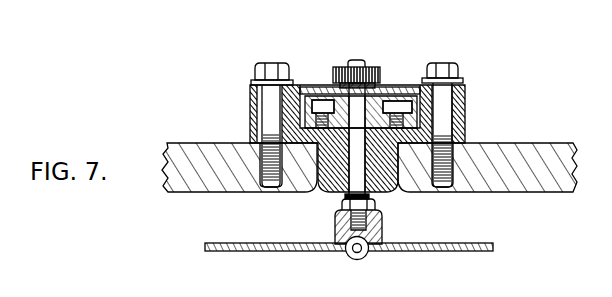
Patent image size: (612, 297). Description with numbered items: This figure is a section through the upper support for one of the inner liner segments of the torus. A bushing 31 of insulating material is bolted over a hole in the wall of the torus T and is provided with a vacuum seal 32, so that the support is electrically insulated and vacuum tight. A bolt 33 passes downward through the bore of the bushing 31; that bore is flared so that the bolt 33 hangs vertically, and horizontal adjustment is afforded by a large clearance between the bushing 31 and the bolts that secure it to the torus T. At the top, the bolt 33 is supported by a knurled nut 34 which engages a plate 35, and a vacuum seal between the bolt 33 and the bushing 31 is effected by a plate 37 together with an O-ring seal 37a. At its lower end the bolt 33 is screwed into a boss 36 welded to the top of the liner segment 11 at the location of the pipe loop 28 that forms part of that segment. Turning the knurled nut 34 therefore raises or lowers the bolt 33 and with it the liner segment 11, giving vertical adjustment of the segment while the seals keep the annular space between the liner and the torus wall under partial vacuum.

The torus T is at (538, 147).
The liner segment 11 is at (481, 251).
The pipe loop 28 is at (366, 256).
The bushing 31 is at (445, 114).
The vacuum seal 32 is at (298, 188).
The bolt 33 is at (356, 60).
The knurled nut 34 is at (372, 70).
The plate 35 is at (332, 90).
The boss 36 is at (383, 225).
The plate 37 is at (381, 96).
The O-ring seal 37a is at (256, 117).